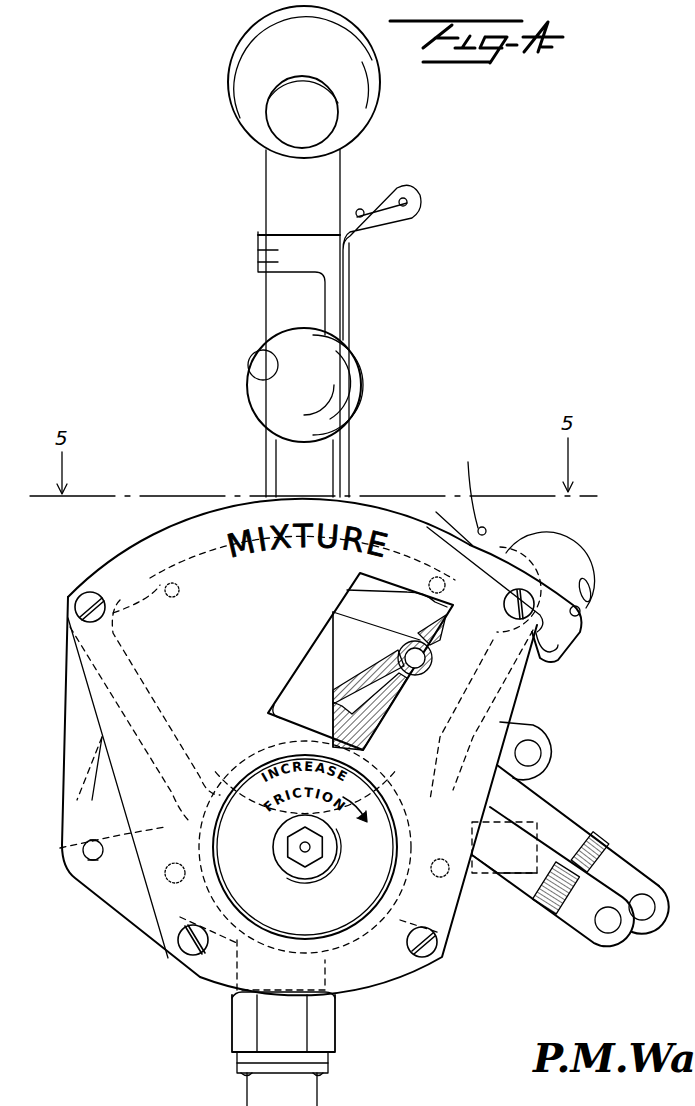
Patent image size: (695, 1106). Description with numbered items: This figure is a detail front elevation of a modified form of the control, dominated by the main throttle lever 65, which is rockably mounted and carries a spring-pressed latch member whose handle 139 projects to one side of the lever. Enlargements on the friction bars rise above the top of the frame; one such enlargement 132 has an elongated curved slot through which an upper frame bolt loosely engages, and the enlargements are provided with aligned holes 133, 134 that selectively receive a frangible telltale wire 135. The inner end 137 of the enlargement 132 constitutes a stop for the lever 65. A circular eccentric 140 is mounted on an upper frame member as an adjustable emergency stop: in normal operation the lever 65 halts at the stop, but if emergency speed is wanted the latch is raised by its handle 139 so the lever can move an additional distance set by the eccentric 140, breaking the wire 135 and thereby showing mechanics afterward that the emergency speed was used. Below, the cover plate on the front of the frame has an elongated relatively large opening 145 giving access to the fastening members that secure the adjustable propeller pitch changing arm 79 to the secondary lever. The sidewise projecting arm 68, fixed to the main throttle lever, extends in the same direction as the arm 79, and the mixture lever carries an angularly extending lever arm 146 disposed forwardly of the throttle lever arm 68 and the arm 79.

The main throttle lever 65 is at (286, 309).
The handle 139 is at (388, 222).
The frangible wire 135 is at (459, 481).
The inner end of enlargement 137 is at (435, 516).
The hole 133 is at (486, 532).
The circular eccentric 140 is at (572, 555).
The hole 134 is at (590, 596).
The enlargement 132 is at (582, 624).
The adjustable arm 79 is at (508, 728).
The sidewise projecting arm 68 is at (530, 808).
The lever arm 146 is at (578, 917).
The opening 145 is at (322, 640).